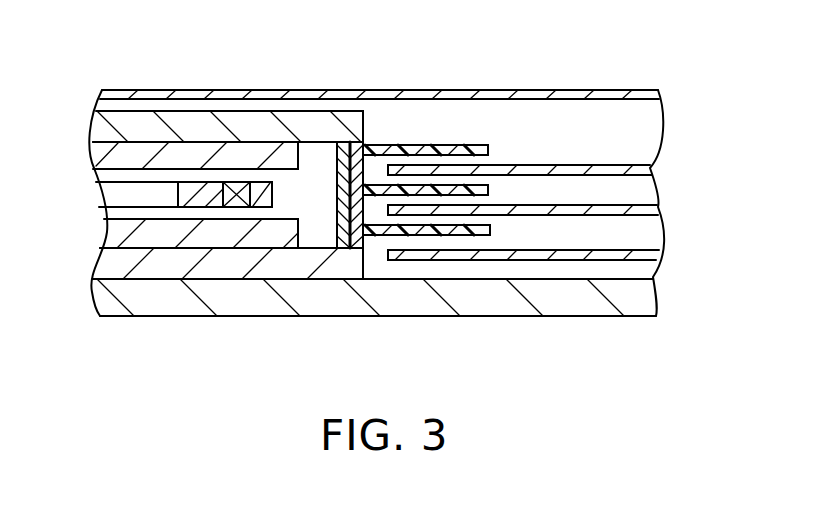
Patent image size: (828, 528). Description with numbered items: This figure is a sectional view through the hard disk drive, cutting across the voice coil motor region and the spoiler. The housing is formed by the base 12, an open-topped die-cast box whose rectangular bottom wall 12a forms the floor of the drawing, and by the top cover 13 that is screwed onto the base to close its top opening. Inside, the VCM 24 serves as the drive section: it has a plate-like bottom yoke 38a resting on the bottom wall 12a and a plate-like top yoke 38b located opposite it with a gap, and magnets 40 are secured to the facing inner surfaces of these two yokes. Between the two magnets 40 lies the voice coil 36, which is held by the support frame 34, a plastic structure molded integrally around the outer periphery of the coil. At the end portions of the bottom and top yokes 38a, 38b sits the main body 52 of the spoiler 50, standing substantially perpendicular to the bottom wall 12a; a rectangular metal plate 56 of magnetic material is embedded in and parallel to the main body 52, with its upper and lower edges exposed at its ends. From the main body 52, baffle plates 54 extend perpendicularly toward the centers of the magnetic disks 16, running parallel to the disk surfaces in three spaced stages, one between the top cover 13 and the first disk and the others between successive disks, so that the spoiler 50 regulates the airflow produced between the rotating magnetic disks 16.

The base 12 is at (408, 326).
The bottom wall 12a is at (550, 308).
The top cover 13 is at (498, 89).
The magnetic disks 16 is at (583, 205).
The voice coil motor 24 is at (300, 85).
The support frame 34 is at (257, 200).
The voice coil 36 is at (237, 200).
The bottom yoke 38a is at (178, 272).
The top yoke 38b is at (197, 125).
The magnets 40 is at (141, 155).
The spoiler 50 is at (381, 252).
The main body 52 is at (337, 208).
The baffle plates 54 is at (430, 153).
The metal plate 56 is at (352, 165).